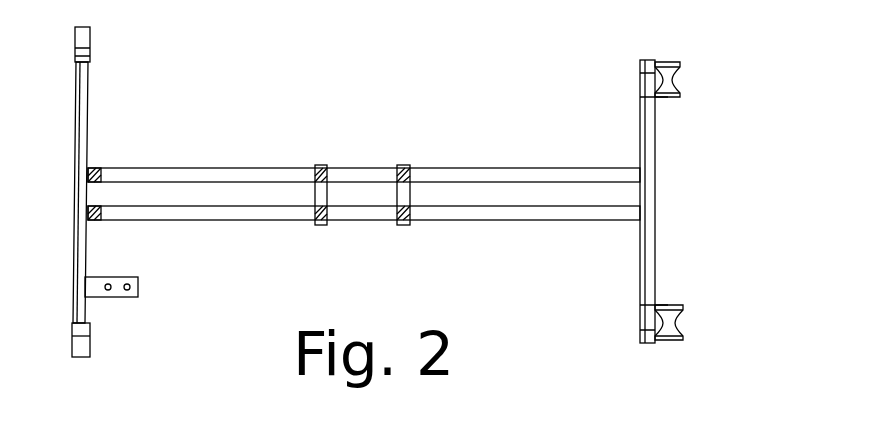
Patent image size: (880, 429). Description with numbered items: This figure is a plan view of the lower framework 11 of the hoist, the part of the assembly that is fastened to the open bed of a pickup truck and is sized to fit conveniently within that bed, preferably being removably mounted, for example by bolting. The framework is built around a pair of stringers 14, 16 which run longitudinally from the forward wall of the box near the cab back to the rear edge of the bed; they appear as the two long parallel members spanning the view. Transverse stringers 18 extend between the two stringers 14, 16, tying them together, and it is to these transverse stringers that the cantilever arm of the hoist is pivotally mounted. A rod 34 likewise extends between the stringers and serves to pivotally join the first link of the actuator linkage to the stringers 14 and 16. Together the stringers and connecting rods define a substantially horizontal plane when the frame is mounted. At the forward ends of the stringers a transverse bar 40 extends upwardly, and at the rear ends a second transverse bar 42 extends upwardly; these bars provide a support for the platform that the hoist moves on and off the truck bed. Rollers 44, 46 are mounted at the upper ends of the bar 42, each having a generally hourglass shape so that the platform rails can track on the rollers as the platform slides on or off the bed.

The lower framework 11 is at (222, 106).
The stringer 14 is at (522, 169).
The stringer 16 is at (549, 221).
The transverse stringer 18 is at (398, 178).
The rod 34 is at (314, 207).
The transverse bar 40 is at (76, 118).
The second transverse bar 42 is at (655, 141).
The roller 44 is at (683, 79).
The roller 46 is at (685, 320).